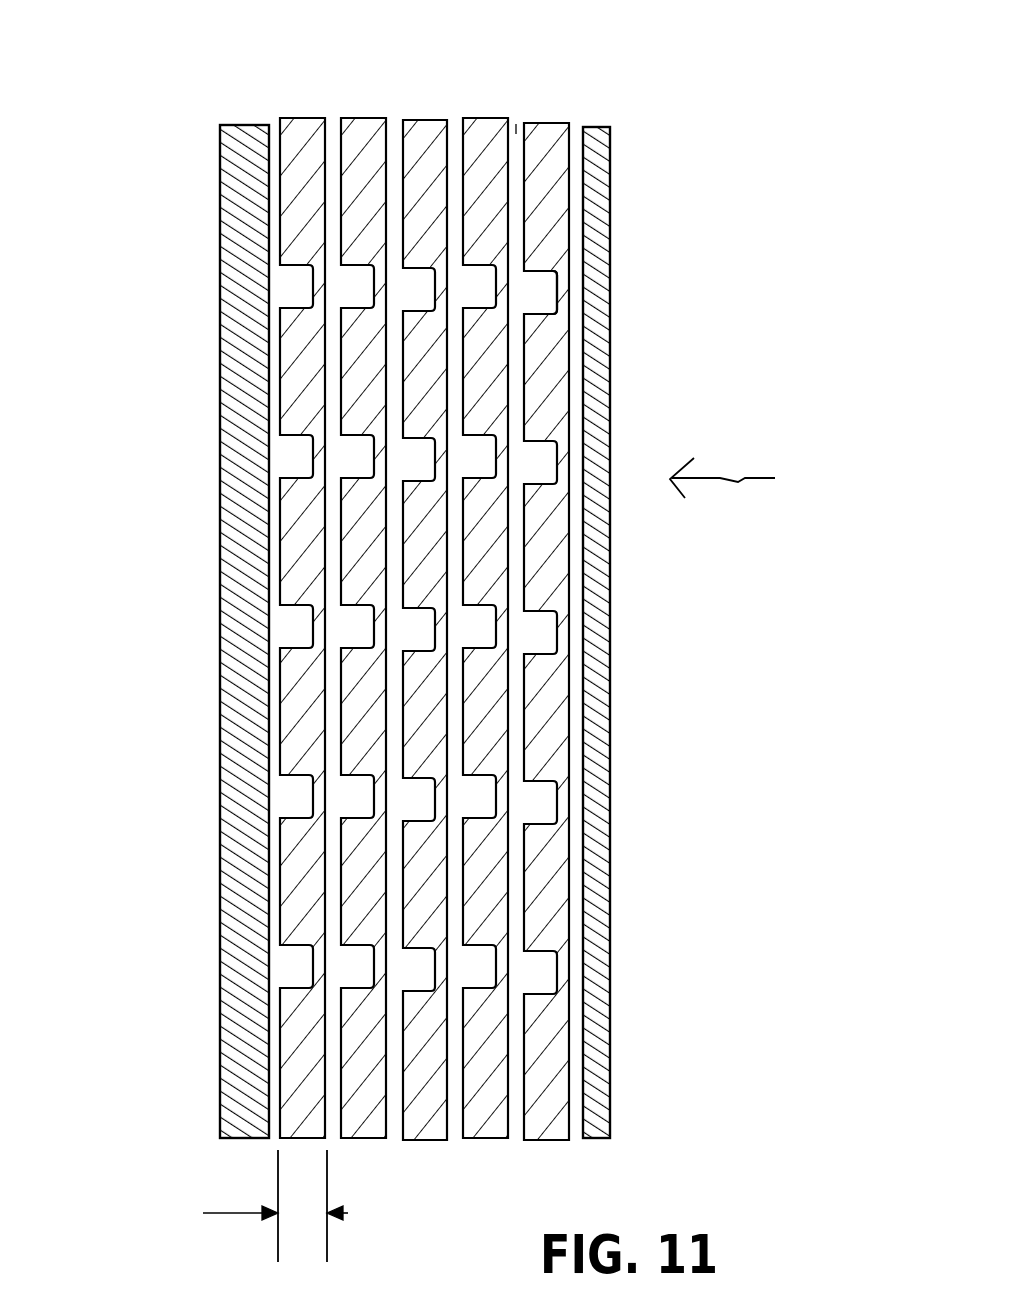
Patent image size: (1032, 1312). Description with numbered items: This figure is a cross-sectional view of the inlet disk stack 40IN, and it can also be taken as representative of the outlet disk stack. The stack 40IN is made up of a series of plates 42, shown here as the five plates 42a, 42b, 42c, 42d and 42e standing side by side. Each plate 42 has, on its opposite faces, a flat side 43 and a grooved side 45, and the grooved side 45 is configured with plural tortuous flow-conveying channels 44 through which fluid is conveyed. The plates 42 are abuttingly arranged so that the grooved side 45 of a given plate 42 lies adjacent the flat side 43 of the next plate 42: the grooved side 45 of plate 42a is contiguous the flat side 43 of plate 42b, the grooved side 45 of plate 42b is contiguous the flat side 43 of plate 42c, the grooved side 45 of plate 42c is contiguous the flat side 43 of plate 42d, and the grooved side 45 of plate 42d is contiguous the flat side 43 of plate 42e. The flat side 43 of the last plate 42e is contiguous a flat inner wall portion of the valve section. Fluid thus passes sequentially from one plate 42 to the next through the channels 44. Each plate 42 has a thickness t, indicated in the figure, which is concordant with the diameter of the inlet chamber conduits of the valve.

The inlet disk stack 40IN is at (765, 476).
The plate 42 is at (489, 656).
The plate 42a is at (553, 1142).
The plate 42b is at (480, 1141).
The plate 42c is at (412, 1141).
The plate 42d is at (366, 117).
The plate 42e is at (300, 117).
The flat side 43 is at (572, 136).
The flow-conveying channel 44 is at (543, 291).
The grooved side 45 is at (520, 138).
The plate thickness t is at (261, 1206).